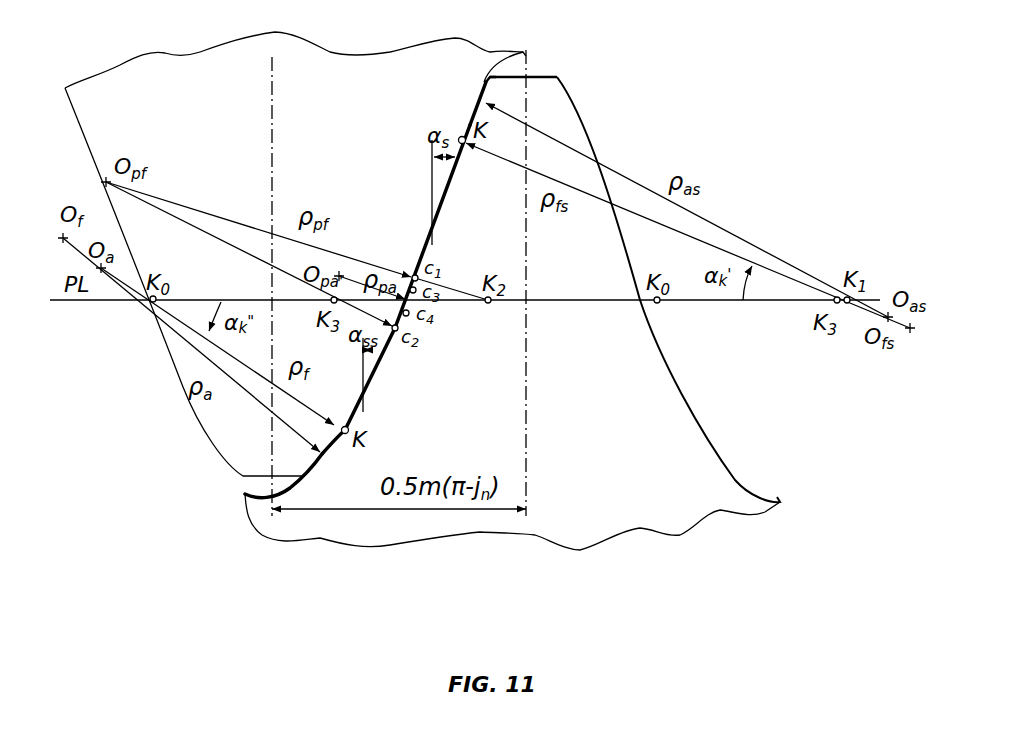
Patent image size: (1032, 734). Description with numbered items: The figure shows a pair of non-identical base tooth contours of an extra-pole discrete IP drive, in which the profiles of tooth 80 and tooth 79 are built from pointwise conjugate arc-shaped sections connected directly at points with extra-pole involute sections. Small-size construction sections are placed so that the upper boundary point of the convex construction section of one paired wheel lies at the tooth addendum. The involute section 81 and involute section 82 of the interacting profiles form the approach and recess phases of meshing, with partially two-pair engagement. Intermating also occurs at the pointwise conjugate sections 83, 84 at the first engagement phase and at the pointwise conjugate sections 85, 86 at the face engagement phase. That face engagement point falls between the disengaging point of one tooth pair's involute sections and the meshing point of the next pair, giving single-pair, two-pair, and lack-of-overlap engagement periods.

The tooth 79 is at (770, 497).
The tooth 80 is at (240, 480).
The involute section 81 is at (452, 181).
The involute section 82 is at (381, 366).
The pointwise conjugate section 83 is at (318, 476).
The pointwise conjugate section 84 is at (316, 470).
The pointwise conjugate section 85 is at (487, 86).
The pointwise conjugate section 86 is at (484, 77).